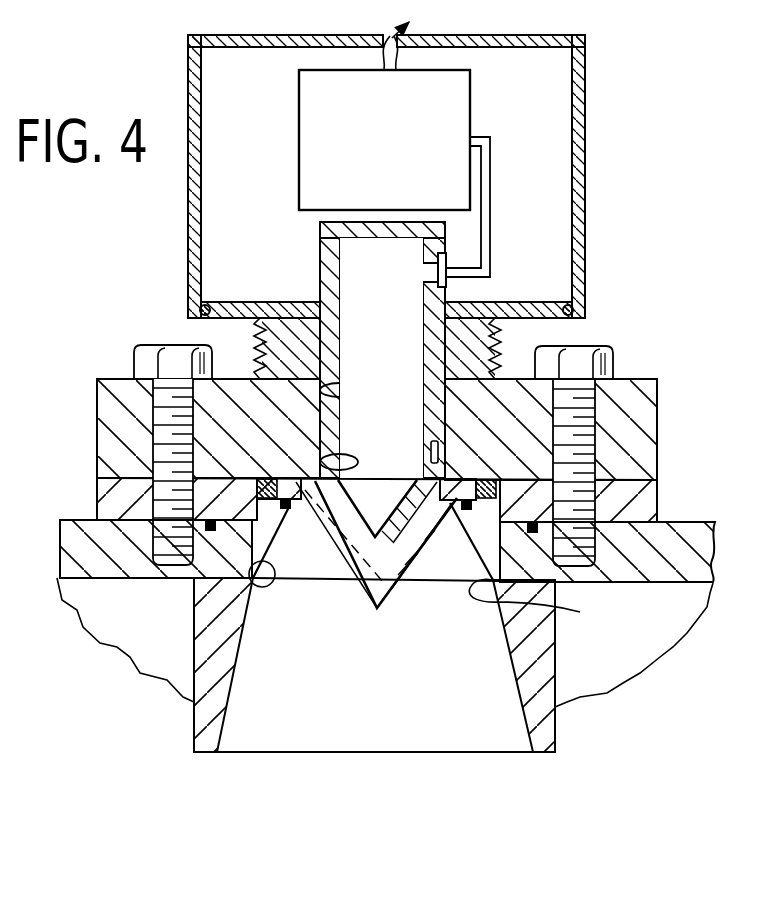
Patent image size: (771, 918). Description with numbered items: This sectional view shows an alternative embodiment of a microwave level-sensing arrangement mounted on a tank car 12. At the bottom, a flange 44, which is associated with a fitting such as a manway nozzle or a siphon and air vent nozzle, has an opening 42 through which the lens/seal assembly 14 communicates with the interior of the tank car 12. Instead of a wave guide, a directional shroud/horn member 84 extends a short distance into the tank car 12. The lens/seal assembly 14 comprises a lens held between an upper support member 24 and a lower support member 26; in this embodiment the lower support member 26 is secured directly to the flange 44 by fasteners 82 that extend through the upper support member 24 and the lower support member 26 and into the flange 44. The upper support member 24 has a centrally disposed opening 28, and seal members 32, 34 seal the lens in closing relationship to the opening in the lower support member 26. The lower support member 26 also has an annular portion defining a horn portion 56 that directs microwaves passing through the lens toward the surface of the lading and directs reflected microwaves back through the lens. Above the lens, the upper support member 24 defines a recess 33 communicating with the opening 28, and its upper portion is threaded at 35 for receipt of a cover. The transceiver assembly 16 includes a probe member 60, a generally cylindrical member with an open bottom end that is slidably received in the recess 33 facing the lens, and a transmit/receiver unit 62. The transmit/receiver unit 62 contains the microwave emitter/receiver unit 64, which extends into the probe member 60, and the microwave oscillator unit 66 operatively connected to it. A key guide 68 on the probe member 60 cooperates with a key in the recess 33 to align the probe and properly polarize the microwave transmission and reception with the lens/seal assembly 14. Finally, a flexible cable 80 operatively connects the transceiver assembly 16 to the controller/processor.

The tank car 12 is at (655, 636).
The lens/seal assembly 14 is at (410, 450).
The transceiver assembly 16 is at (421, 250).
The upper support member 24 is at (643, 442).
The lower support member 26 is at (642, 502).
The opening 28 is at (340, 458).
The seal member 32 is at (258, 498).
The recess 33 is at (263, 372).
The seal member 34 is at (285, 506).
The threaded portion 35 is at (500, 362).
The opening 42 is at (208, 584).
The flange 44 is at (700, 546).
The horn portion 56 is at (538, 605).
The probe member 60 is at (262, 333).
The transmit/receiver unit 62 is at (548, 133).
The microwave emitter/receiver unit 64 is at (402, 270).
The microwave oscillator unit 66 is at (457, 105).
The key guide 68 is at (443, 453).
The flexible cable 80 is at (403, 37).
The fasteners 82 is at (583, 357).
The directional shroud/horn member 84 is at (543, 717).